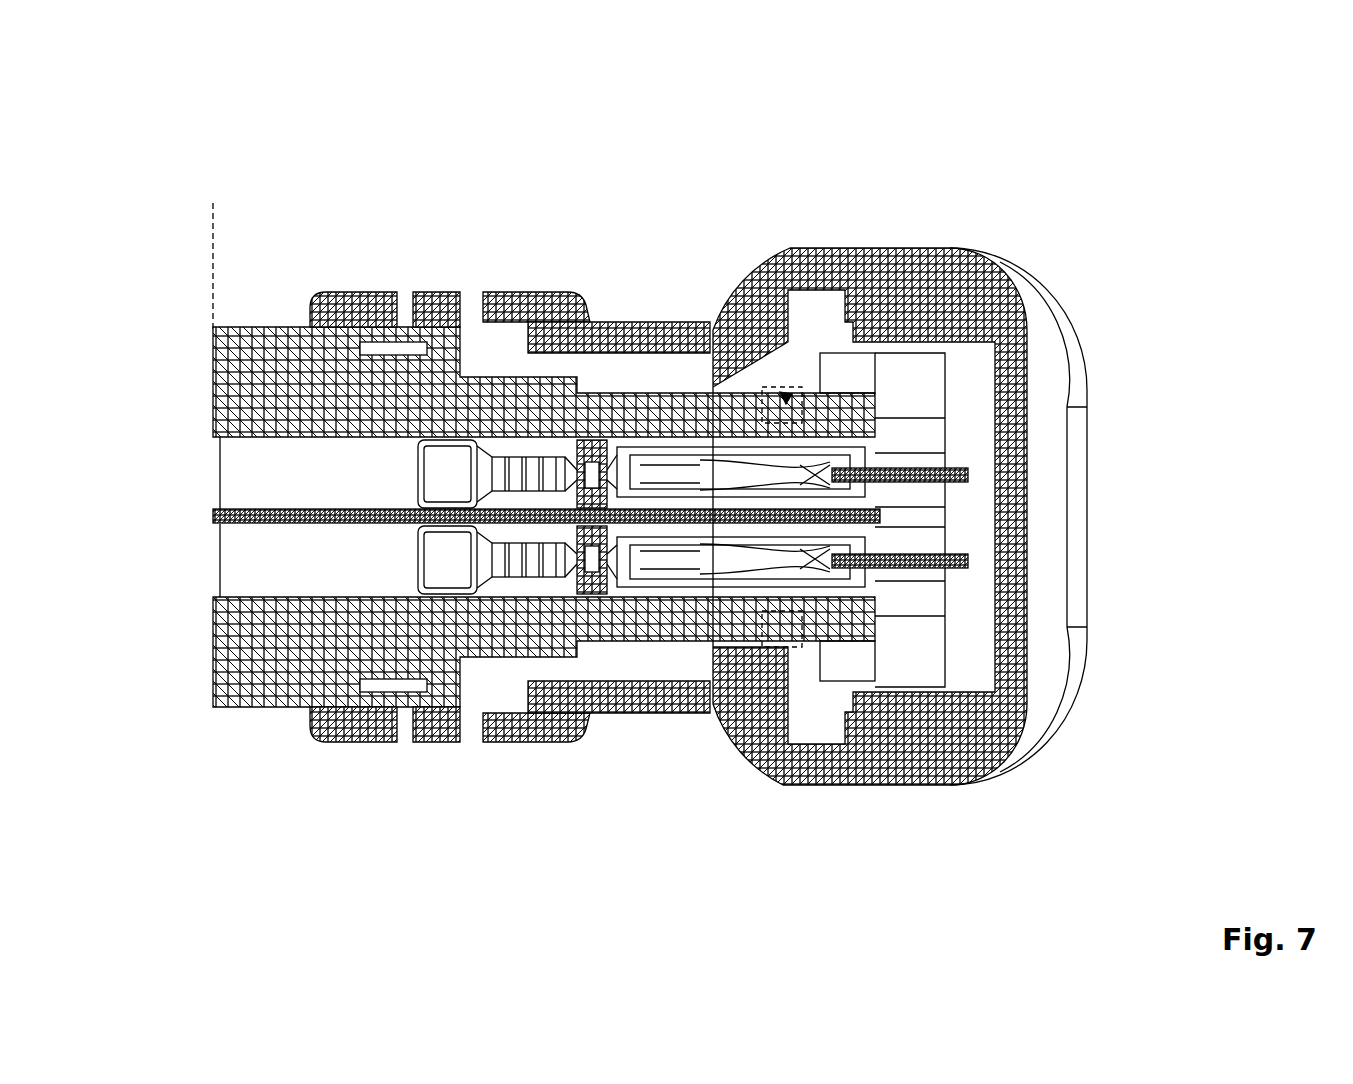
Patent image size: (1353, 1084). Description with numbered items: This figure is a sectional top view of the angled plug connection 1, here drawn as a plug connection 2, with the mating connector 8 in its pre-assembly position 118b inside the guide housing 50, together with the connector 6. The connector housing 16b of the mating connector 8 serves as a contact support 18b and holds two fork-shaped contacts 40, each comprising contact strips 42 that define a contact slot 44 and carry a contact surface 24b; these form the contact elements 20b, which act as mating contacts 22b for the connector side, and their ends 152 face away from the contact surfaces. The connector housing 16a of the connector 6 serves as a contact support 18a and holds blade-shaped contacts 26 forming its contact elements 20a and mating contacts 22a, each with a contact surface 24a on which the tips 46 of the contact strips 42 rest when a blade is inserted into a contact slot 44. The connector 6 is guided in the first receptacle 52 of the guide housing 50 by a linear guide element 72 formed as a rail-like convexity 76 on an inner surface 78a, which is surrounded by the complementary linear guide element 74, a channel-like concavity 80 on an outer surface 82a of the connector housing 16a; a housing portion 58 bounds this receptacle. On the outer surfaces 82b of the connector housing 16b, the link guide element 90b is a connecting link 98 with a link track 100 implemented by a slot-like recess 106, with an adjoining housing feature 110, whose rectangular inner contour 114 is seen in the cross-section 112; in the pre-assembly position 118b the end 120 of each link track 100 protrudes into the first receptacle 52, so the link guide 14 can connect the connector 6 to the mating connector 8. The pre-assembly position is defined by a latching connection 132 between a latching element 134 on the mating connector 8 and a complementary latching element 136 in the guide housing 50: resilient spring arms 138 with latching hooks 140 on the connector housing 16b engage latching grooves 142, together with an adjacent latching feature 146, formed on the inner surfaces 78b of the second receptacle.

The angled plug connection 1 is at (1093, 84).
The connector 2 is at (684, 510).
The mating connector 8 is at (205, 238).
The connector 6 is at (913, 528).
The pre-assembly position 118b is at (213, 220).
The connector housing 16b is at (519, 551).
The contact support 18b is at (243, 678).
The latching element 134 is at (430, 490).
The latching groove 142 is at (430, 490).
The nut flange 146 is at (430, 490).
The complementary latching element 136 is at (430, 490).
The latching hook 140 is at (430, 490).
The resilient spring arm 138 is at (430, 490).
The latching connection 132 is at (405, 330).
The linear guide element 72 is at (684, 510).
The channel-like concavity 80 is at (684, 510).
The inner surface 78b is at (590, 512).
The outer surface 82b is at (535, 335).
The contact slot 44 is at (880, 512).
The end 152 is at (452, 477).
The contact element 20b is at (688, 511).
The mating contact 22b is at (688, 511).
The fork-shaped contact 40 is at (688, 511).
The contact strip 42 is at (688, 511).
The cross-section 112 is at (688, 511).
The inner contour 114 is at (688, 511).
The contact surface 24b is at (688, 511).
The end 120 is at (820, 836).
The guide housing 50 is at (913, 528).
The link guide 14 is at (913, 528).
The link guide element 90b is at (913, 528).
The connecting link 98 is at (913, 528).
The link track 100 is at (913, 528).
The slot-like recess 106 is at (913, 528).
The housing rib 110 is at (913, 528).
The inner surface 78a is at (913, 528).
The rail-like convexity 76 is at (913, 528).
The connector housing 16a is at (913, 528).
The contact support 18a is at (913, 528).
The first receptacle 52 is at (913, 528).
The housing collar 58 is at (913, 528).
The outer surface 82a is at (878, 922).
The complementary linear guide element 74 is at (895, 324).
The tip 46 is at (1051, 529).
The contact element 20a is at (1051, 529).
The mating contact 22a is at (1051, 529).
The blade-shaped contact 26 is at (1051, 529).
The contact surface 24a is at (860, 456).